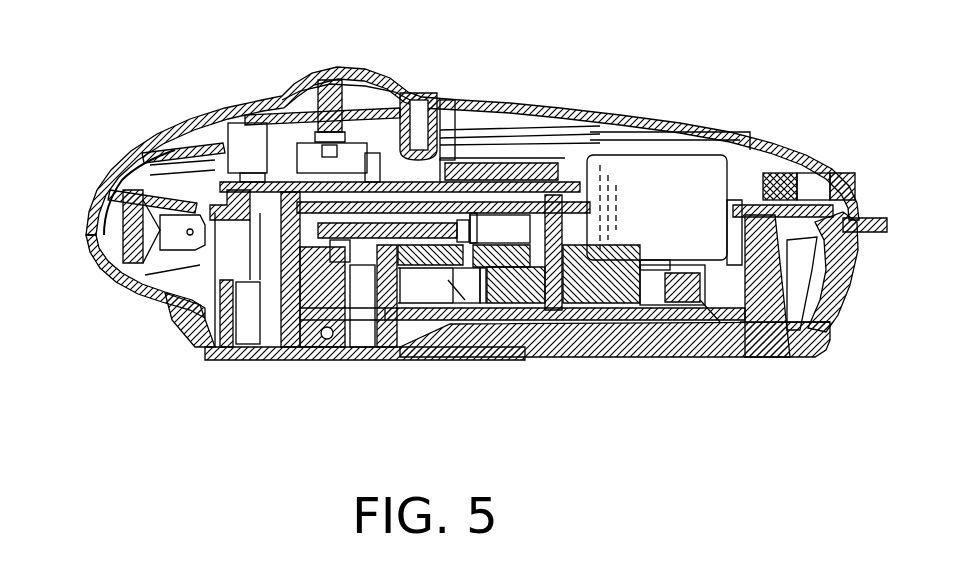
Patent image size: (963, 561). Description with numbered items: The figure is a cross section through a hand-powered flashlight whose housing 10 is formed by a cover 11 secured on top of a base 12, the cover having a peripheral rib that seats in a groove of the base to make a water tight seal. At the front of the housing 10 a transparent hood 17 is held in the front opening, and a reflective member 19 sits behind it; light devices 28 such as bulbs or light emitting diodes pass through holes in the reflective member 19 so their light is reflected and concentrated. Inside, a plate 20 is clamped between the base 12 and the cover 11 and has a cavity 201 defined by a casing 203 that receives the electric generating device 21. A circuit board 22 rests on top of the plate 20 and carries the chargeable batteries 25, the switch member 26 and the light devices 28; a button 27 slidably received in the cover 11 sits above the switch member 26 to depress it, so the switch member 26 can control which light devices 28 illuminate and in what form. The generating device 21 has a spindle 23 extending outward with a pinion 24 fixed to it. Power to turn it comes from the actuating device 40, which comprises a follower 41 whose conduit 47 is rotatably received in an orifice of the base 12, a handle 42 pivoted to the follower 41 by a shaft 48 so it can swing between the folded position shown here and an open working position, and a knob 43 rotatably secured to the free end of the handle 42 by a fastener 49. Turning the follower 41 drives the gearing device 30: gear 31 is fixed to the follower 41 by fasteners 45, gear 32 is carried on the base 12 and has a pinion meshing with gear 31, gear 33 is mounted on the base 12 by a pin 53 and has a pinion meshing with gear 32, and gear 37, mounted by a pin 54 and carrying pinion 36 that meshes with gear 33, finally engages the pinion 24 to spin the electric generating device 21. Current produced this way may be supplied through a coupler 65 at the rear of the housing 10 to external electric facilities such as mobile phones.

The housing 10 is at (150, 88).
The cover 11 is at (478, 100).
The base 12 is at (745, 285).
The transparent hood 17 is at (88, 215).
The reflective member 19 is at (115, 185).
The plate 20 is at (450, 185).
The electric generating device 21 is at (665, 168).
The cavity 201 is at (710, 205).
The casing 203 is at (740, 290).
The circuit board 22 is at (238, 180).
The spindle 23 is at (670, 300).
The pinion 24 is at (645, 320).
The chargeable batteries 25 is at (530, 182).
The switch member 26 is at (360, 85).
The button 27 is at (330, 80).
The light devices 28 is at (132, 285).
The gearing device 30 is at (485, 320).
The gear 31 is at (175, 315).
The gear 32 is at (415, 312).
The gear 33 is at (500, 305).
The pinion 36 is at (545, 200).
The gear 37 is at (610, 330).
The actuating device 40 is at (765, 380).
The follower 41 is at (260, 362).
The handle 42 is at (560, 328).
The knob 43 is at (830, 282).
The fasteners 45 is at (355, 358).
The conduit 47 is at (235, 362).
The shaft 48 is at (325, 268).
The fastener 49 is at (840, 330).
The pin 53 is at (520, 320).
The pin 54 is at (560, 200).
The coupler 65 is at (812, 180).